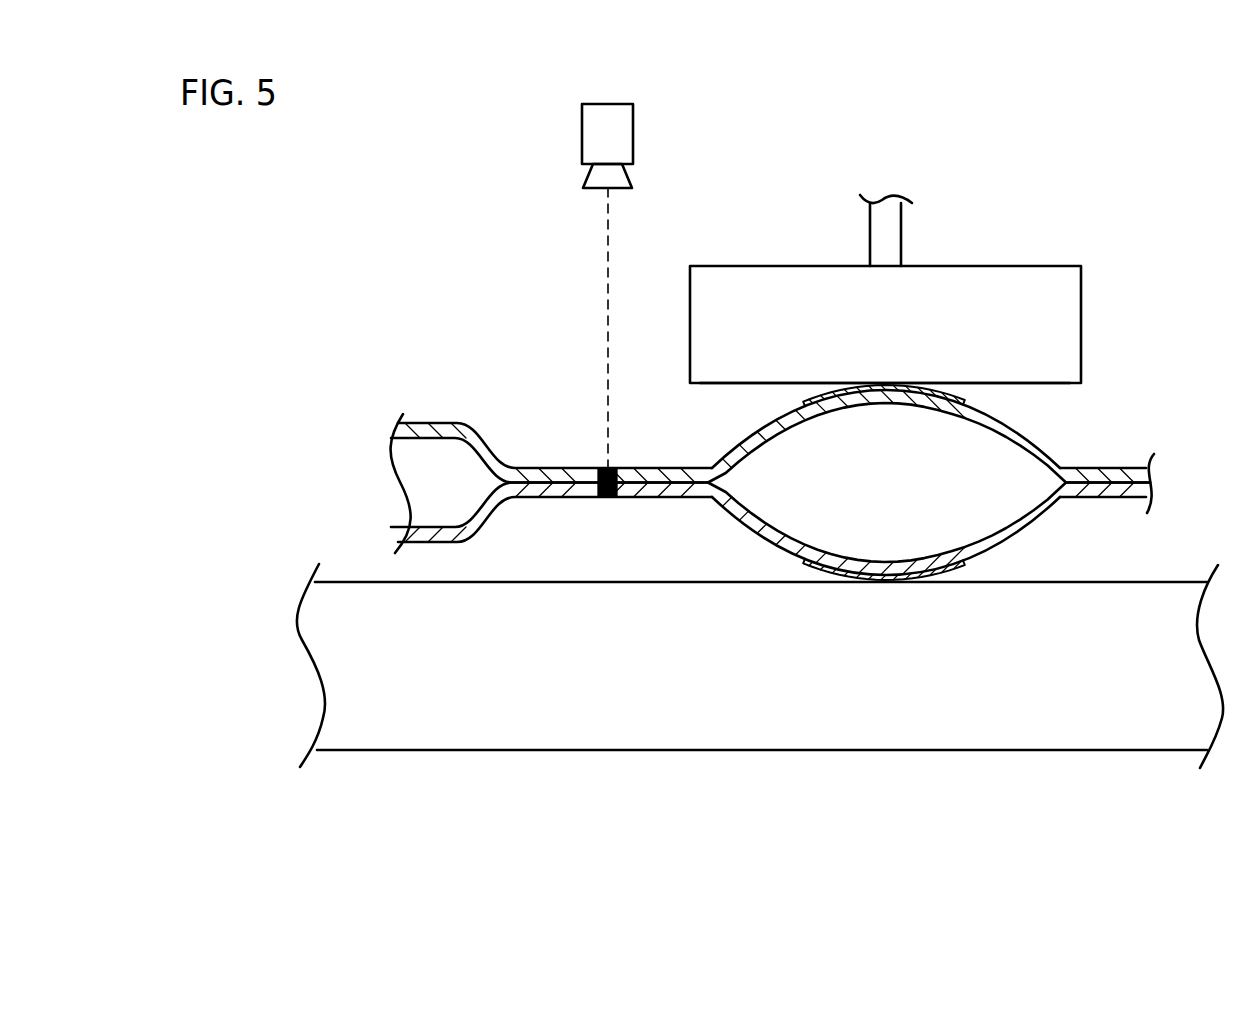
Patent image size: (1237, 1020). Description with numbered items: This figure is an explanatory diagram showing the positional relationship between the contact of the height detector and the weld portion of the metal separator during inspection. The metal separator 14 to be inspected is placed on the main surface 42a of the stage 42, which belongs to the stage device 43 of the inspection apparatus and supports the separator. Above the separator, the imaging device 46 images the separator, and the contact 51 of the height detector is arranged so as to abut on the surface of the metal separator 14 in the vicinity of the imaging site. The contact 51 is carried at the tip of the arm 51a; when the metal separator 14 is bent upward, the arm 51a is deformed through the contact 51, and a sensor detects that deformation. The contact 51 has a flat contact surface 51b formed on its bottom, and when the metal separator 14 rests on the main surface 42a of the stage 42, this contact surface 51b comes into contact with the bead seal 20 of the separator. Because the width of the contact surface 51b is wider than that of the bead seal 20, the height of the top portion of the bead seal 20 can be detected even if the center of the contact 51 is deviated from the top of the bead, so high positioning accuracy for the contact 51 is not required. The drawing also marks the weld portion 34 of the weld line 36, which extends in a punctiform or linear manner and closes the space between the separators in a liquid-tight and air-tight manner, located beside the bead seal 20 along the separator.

The metal separator 14 is at (1113, 457).
The bead seal 20 is at (1017, 430).
The weld portion 34 is at (645, 508).
The weld line 36 is at (608, 497).
The stage 42 is at (756, 662).
The main surface 42a is at (358, 580).
The stage device 43 is at (756, 657).
The imaging device 46 is at (633, 135).
The contact 51 is at (874, 312).
The arm 51a is at (880, 232).
The contact surface 51b is at (735, 385).